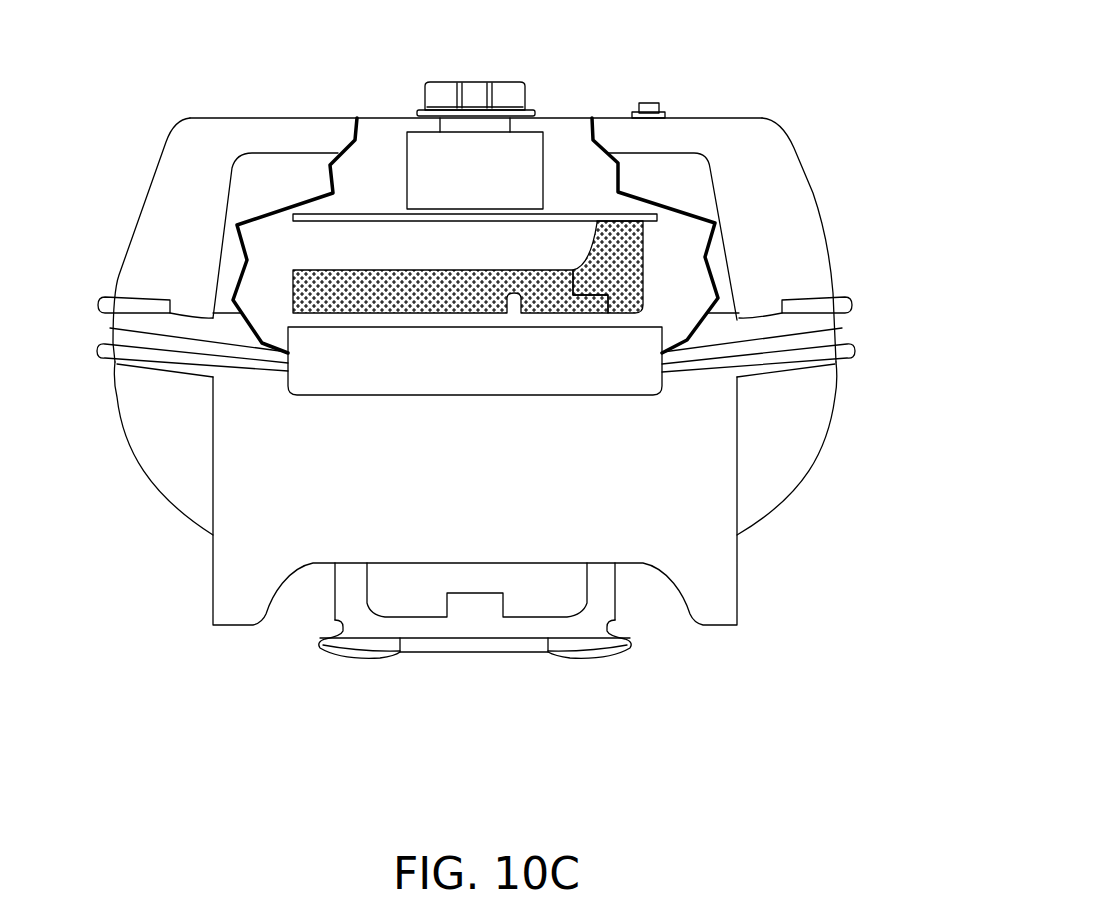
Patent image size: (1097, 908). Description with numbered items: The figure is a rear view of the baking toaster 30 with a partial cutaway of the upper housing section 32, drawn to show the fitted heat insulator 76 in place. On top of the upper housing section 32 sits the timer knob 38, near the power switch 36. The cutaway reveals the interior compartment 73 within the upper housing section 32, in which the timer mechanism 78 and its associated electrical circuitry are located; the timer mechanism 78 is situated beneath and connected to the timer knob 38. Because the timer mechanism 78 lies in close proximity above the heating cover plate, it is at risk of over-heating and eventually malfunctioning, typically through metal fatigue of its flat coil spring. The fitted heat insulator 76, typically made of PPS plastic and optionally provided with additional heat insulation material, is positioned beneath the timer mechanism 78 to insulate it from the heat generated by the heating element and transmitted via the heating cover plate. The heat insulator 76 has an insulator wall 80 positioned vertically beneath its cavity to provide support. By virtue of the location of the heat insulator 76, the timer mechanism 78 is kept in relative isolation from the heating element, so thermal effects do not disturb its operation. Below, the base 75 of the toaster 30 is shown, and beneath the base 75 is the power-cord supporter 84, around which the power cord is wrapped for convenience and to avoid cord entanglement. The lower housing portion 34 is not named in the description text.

The baking toaster 30 is at (168, 97).
The upper housing section 32 is at (158, 197).
The lower housing 34 is at (177, 475).
The power switch 36 is at (653, 102).
The timer knob 38 is at (442, 78).
The interior compartment 73 is at (568, 142).
The base 75 is at (390, 598).
The fitted heat insulator 76 is at (676, 280).
The timer mechanism 78 is at (428, 162).
The insulator wall 80 is at (313, 292).
The power-cord supporter 84 is at (608, 648).